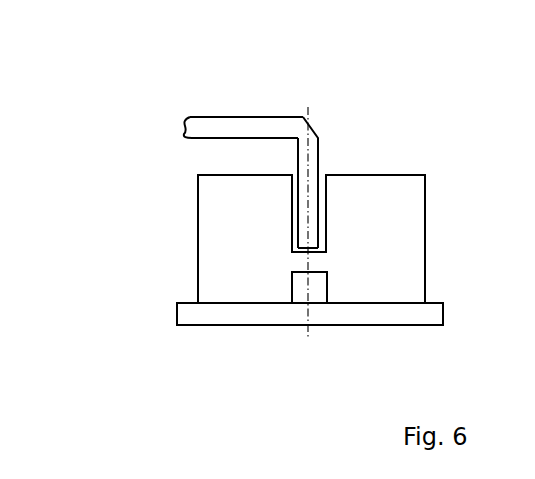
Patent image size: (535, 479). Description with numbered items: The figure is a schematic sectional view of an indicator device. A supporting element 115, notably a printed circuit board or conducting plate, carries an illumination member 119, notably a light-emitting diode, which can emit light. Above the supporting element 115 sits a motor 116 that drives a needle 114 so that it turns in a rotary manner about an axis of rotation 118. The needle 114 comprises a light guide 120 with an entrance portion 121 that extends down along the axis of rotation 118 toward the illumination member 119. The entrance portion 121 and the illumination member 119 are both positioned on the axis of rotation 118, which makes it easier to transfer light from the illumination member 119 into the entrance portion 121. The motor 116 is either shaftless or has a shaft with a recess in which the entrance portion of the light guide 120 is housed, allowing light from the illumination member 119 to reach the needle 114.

The needle 114 is at (314, 215).
The supporting element 115 is at (193, 317).
The motor 116 is at (230, 225).
The axis of rotation 118 is at (312, 207).
The illumination member 119 is at (300, 297).
The light guide 120 is at (285, 127).
The entrance portion 121 is at (308, 250).